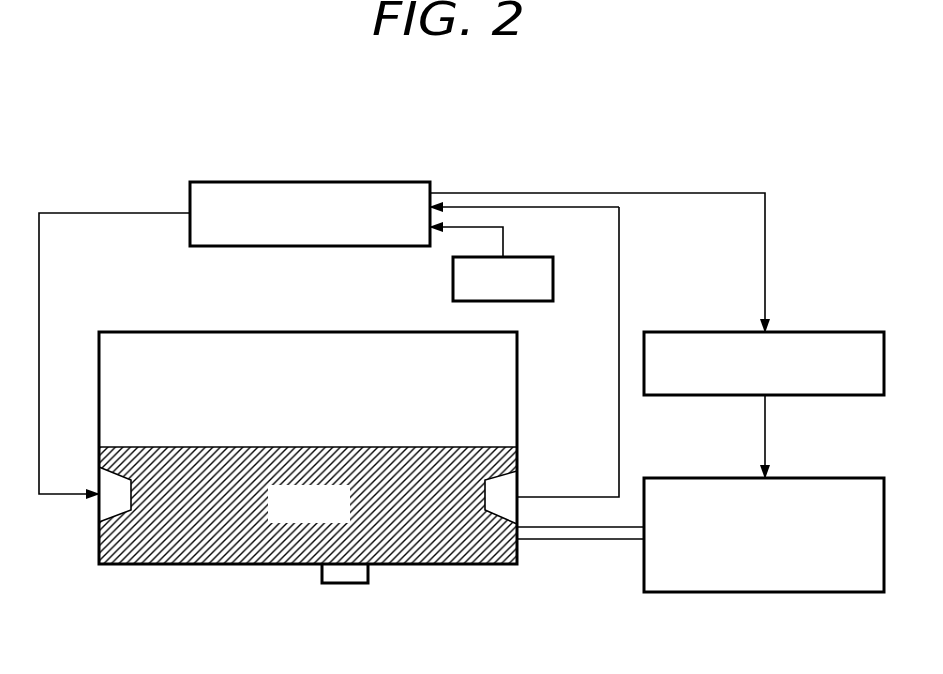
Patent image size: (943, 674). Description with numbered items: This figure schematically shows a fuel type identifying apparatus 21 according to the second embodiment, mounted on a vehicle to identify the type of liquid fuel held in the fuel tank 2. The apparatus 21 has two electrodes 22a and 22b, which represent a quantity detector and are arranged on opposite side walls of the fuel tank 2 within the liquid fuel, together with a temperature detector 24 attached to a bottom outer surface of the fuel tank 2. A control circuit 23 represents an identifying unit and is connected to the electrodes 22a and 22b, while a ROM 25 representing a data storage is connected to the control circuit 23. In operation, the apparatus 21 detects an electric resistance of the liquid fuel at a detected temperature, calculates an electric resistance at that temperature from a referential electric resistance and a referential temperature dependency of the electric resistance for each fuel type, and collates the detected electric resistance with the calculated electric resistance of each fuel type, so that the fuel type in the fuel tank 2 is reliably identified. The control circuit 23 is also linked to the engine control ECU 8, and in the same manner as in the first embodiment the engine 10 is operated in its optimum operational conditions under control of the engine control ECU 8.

The fuel type identifying apparatus 21 is at (240, 128).
The control circuit 23 is at (393, 182).
The ROM 25 is at (453, 278).
The engine control ECU 8 is at (860, 332).
The engine 10 is at (860, 478).
The fuel tank 2 is at (112, 332).
The electrode 22a is at (108, 507).
The electrode 22b is at (507, 485).
The temperature detector 24 is at (355, 585).